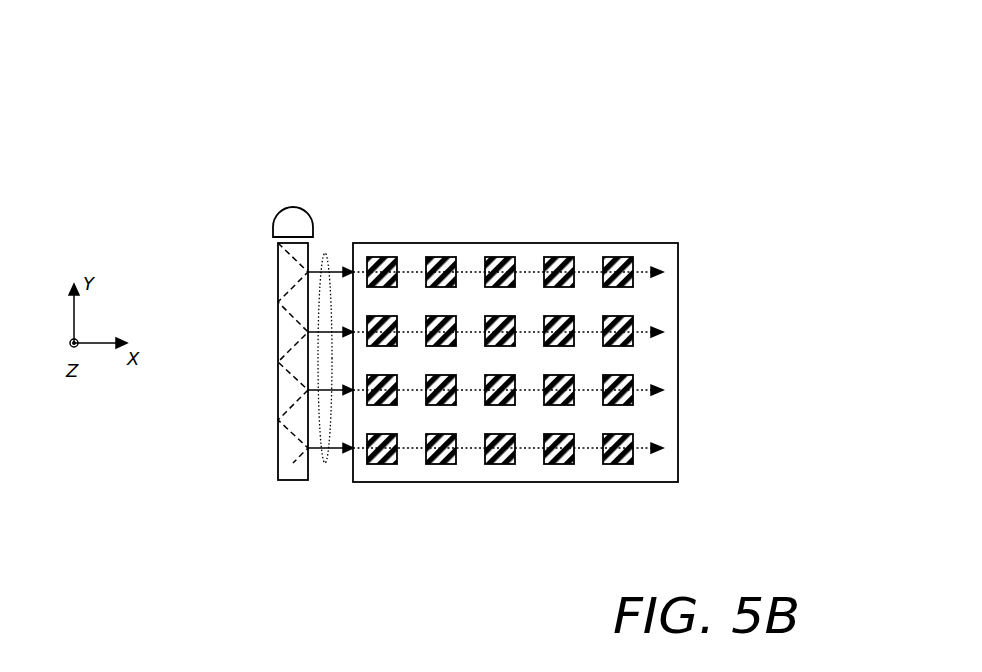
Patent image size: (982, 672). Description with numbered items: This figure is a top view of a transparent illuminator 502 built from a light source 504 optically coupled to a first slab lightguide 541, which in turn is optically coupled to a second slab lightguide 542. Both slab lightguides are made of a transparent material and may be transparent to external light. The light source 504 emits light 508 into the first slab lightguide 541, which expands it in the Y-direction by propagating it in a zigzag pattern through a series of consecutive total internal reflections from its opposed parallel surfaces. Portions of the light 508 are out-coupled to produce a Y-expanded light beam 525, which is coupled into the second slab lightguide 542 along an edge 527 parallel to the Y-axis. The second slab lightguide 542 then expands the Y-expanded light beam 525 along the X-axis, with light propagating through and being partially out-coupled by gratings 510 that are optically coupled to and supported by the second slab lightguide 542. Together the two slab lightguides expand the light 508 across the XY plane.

The illuminator 502 is at (630, 110).
The light source 504 is at (294, 217).
The light 508 is at (285, 345).
The gratings 510 is at (565, 258).
The Y-expanded light beam 525 is at (472, 268).
The edge 527 is at (336, 242).
The first slab lightguide 541 is at (278, 450).
The second slab lightguide 542 is at (670, 296).